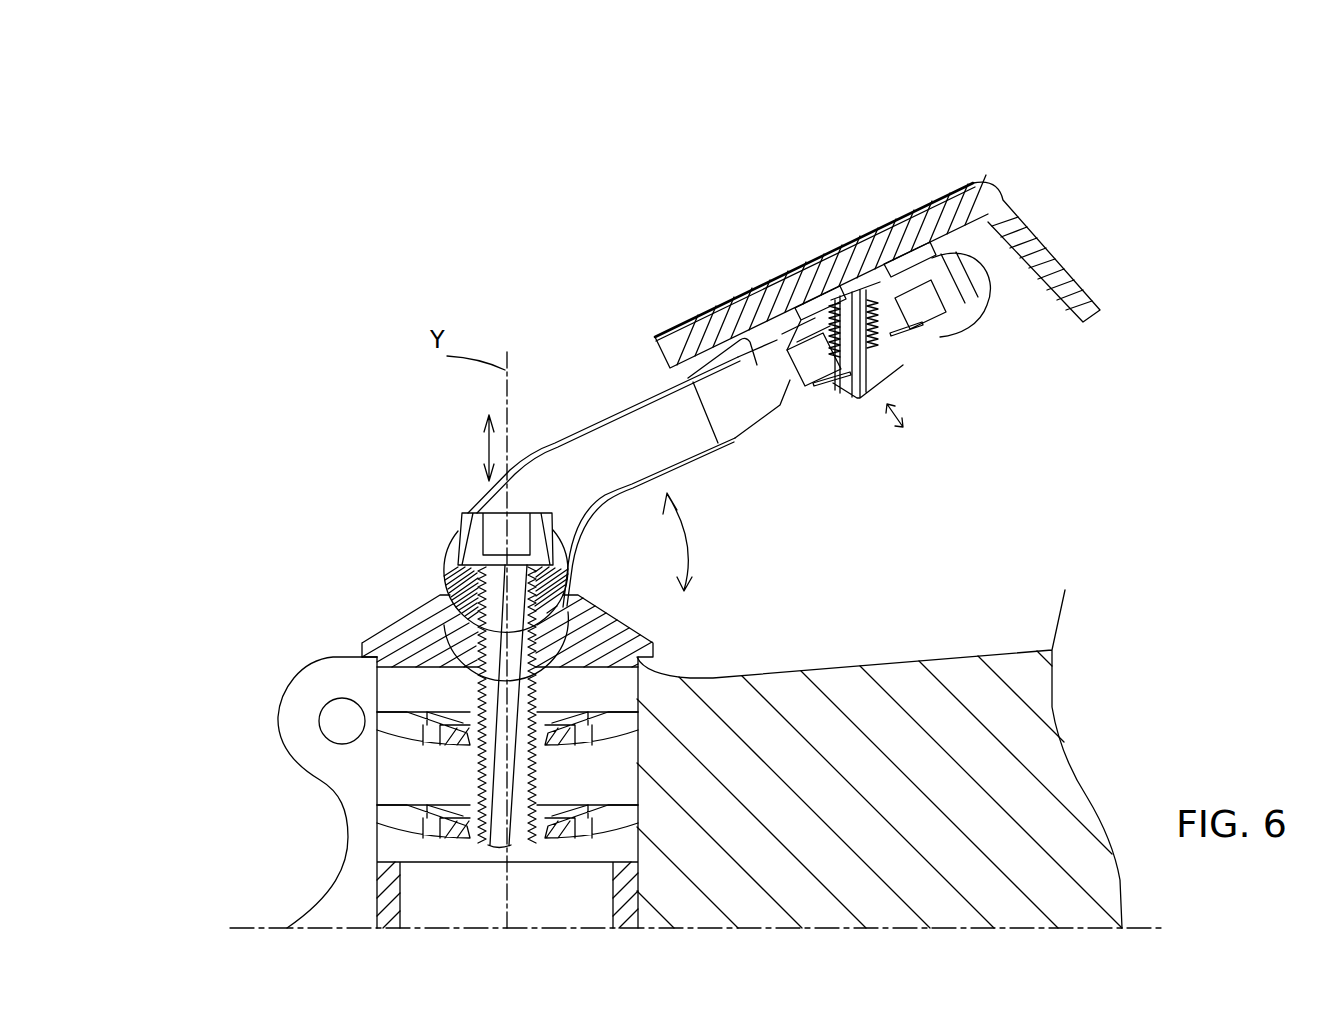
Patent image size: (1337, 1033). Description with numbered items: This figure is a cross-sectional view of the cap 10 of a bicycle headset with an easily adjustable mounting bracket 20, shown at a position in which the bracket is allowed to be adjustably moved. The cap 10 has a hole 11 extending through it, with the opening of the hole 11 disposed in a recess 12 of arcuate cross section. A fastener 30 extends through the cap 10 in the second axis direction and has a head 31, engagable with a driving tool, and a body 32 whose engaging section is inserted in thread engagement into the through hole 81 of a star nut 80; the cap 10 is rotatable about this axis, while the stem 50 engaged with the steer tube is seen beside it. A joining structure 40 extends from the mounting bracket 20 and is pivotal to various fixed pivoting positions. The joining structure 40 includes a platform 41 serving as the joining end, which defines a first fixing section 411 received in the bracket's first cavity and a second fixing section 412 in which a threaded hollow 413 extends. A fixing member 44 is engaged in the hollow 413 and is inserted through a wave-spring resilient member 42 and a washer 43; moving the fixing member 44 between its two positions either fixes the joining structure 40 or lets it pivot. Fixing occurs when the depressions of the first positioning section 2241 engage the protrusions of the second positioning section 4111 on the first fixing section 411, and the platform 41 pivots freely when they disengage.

The cap 10 is at (362, 620).
The hole 11 is at (560, 608).
The recess 12 is at (553, 583).
The mounting bracket 20 is at (612, 383).
The fastener 30 is at (447, 543).
The head 31 is at (470, 519).
The body 32 is at (478, 581).
The joining structure 40 is at (1122, 262).
The platform 41 is at (882, 250).
The first fixing section 411 is at (973, 278).
The second positioning section 4111 is at (943, 307).
The second fixing section 412 is at (893, 367).
The hollow 413 is at (807, 298).
The resilient member 42 is at (820, 387).
The washer 43 is at (833, 382).
The fixing member 44 is at (890, 370).
The first positioning section 2241 is at (915, 330).
The stem 50 is at (320, 652).
The star nut 80 is at (403, 727).
The through hole 81 is at (478, 752).